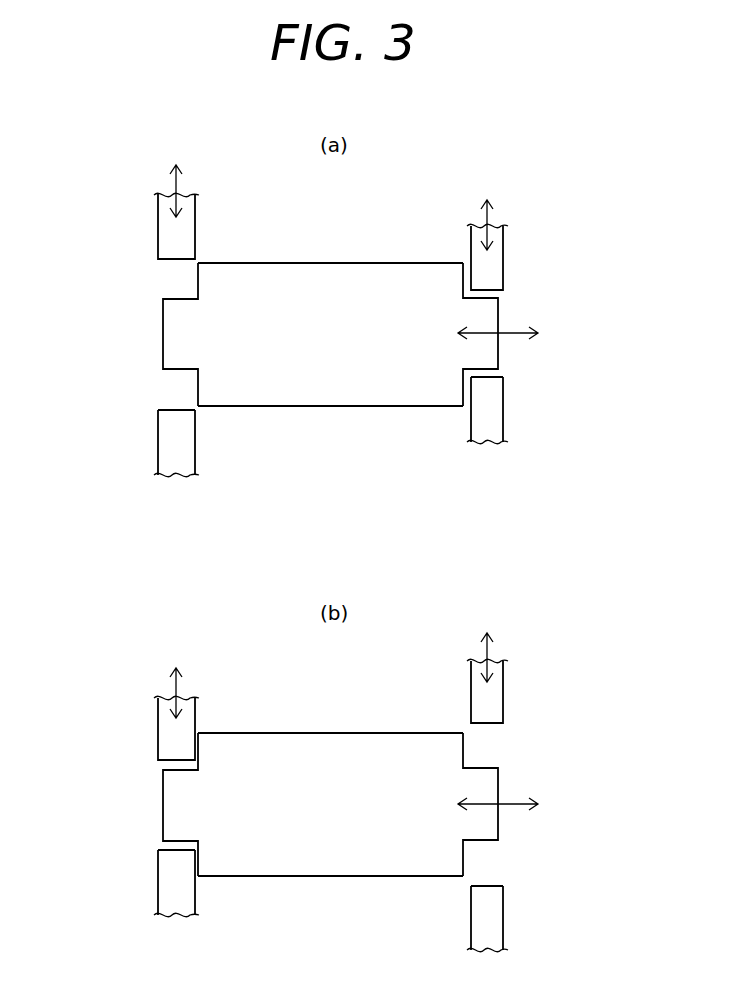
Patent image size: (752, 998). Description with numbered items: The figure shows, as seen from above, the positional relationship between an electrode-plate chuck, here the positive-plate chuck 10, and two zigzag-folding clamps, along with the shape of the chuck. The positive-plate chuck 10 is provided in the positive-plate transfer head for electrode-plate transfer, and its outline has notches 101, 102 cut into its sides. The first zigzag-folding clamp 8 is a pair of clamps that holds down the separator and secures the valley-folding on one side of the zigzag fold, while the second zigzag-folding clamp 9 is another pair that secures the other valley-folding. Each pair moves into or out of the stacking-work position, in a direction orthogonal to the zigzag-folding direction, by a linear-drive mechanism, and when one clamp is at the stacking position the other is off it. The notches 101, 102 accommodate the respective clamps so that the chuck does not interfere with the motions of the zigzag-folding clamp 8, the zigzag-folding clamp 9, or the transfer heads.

The zigzag-folding clamp 8 is at (493, 283).
In FIG. 3b, the zigzag-folding clamp 8 is at (493, 702).
The zigzag-folding clamp 9 is at (167, 235).
In FIG. 3b, the zigzag-folding clamp 9 is at (167, 727).
The positive-plate chuck 10 is at (325, 273).
In FIG. 3b, the positive-plate chuck 10 is at (325, 742).
The notch 101 is at (468, 275).
In FIG. 3b, the notch 101 is at (479, 750).
The notch 102 is at (188, 279).
In FIG. 3b, the notch 102 is at (175, 764).